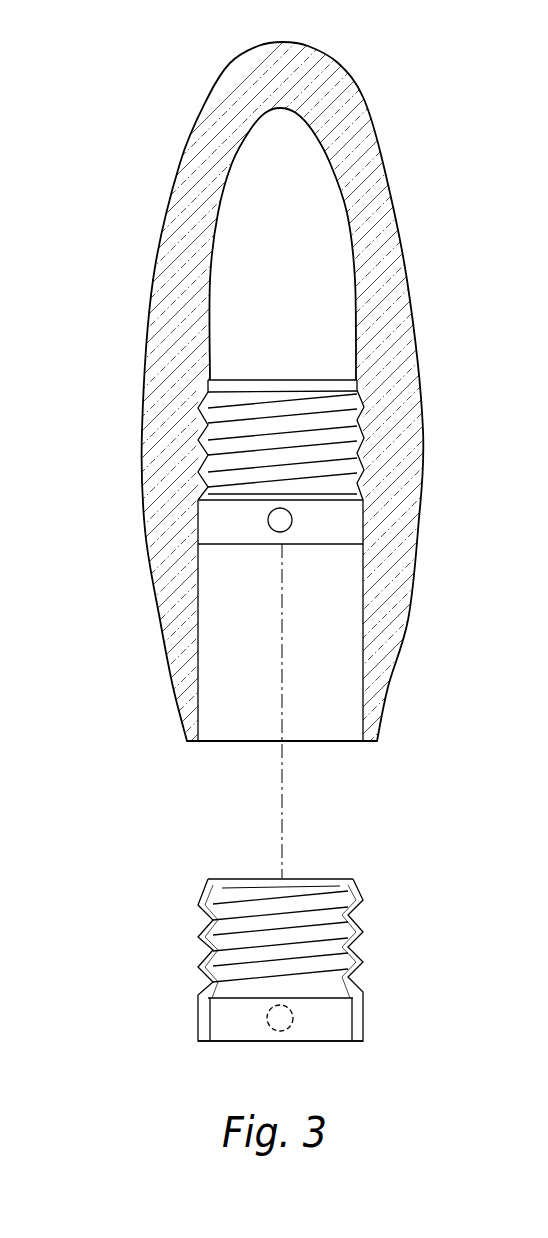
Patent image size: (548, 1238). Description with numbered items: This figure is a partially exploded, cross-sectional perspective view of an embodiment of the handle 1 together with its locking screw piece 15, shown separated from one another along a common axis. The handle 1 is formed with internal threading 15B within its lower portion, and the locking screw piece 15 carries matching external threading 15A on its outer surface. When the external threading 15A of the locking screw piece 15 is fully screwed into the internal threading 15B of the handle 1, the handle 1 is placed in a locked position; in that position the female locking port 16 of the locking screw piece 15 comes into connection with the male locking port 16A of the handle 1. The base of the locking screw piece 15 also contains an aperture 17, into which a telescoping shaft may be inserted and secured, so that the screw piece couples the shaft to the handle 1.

The handle 1 is at (402, 238).
The locking screw piece 15 is at (240, 929).
The external threading 15A is at (243, 980).
The internal threading 15B is at (222, 405).
The female locking port 16 is at (293, 1017).
The male locking port 16A is at (268, 520).
The aperture 17 is at (228, 1042).